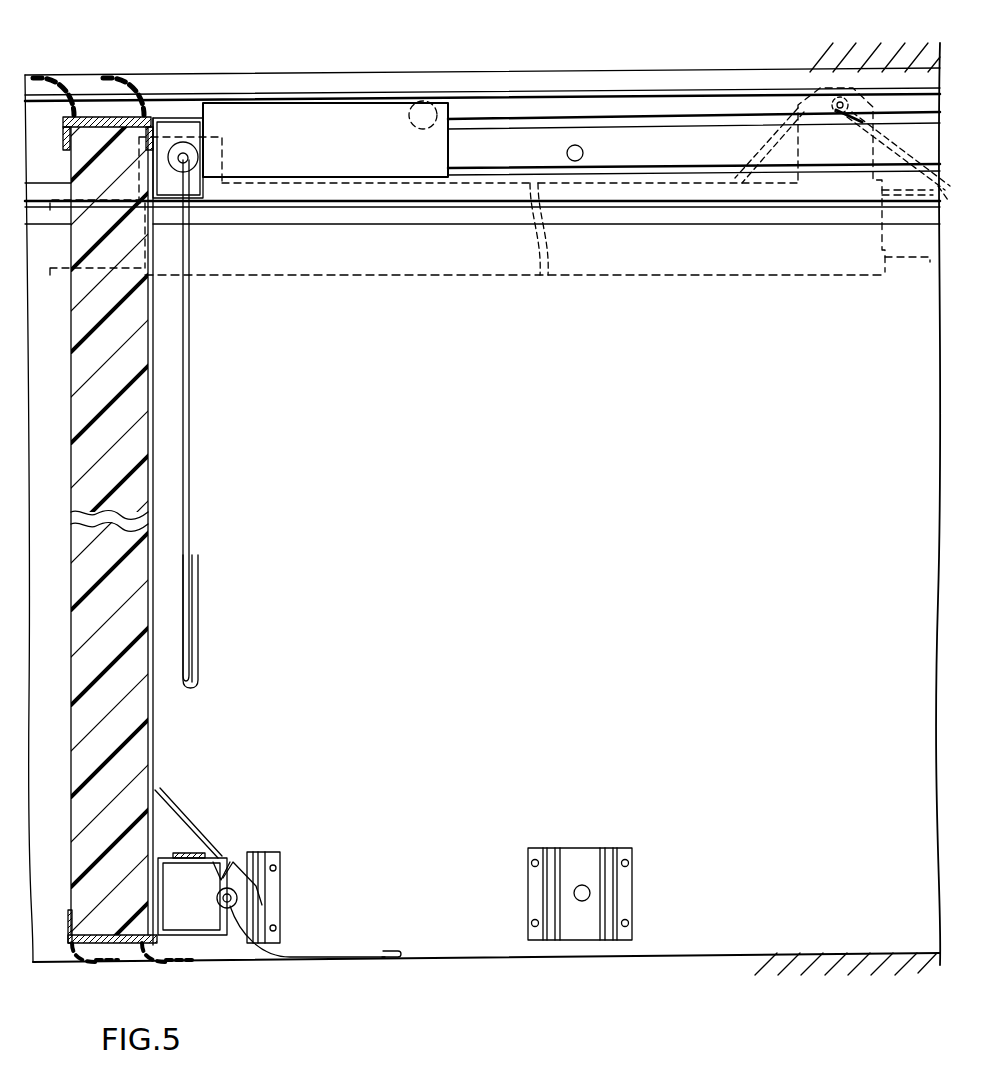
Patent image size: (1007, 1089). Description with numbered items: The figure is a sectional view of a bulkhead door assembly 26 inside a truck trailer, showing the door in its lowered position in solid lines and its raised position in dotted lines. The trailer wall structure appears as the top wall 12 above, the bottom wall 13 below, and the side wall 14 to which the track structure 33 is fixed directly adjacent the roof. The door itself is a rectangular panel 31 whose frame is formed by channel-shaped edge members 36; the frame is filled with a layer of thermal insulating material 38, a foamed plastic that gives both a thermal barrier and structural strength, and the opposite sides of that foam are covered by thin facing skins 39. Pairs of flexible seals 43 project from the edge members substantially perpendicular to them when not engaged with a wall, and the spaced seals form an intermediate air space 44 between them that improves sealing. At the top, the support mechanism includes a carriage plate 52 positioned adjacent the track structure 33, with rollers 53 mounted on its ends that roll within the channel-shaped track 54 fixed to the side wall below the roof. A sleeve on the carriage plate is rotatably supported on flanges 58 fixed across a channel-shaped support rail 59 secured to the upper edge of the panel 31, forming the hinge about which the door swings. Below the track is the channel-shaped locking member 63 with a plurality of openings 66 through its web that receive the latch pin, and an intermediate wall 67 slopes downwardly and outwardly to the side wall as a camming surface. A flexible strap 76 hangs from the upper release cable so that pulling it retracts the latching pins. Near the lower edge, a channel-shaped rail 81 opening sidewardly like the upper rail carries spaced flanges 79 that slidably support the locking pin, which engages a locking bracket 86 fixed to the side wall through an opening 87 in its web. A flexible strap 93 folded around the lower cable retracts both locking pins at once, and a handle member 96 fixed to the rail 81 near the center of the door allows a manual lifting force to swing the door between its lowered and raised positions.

The top wall 12 is at (813, 52).
The bottom wall 13 is at (762, 960).
The side wall 14 is at (850, 807).
The bulkhead door assembly 26 is at (206, 577).
The panel 31 is at (153, 722).
The track structure 33 is at (678, 93).
The edge member 36 is at (67, 135).
The thermal insulating material 38 is at (78, 778).
The facing skin 39 is at (72, 700).
The flexible seal 43 is at (52, 76).
The intermediate air space 44 is at (87, 100).
The carriage plate 52 is at (327, 115).
The roller 53 is at (426, 112).
The channel-shaped track 54 is at (593, 108).
The flange 58 is at (197, 185).
The support rail 59 is at (200, 117).
The locking member 63 is at (692, 157).
The opening 66 is at (578, 161).
The intermediate wall 67 is at (832, 183).
The flexible strap 76 is at (190, 473).
The flange 79 is at (210, 922).
The rail 81 is at (182, 858).
The locking bracket 86 is at (247, 862).
The opening 87 is at (582, 885).
The flexible strap 93 is at (344, 957).
The handle member 96 is at (243, 885).